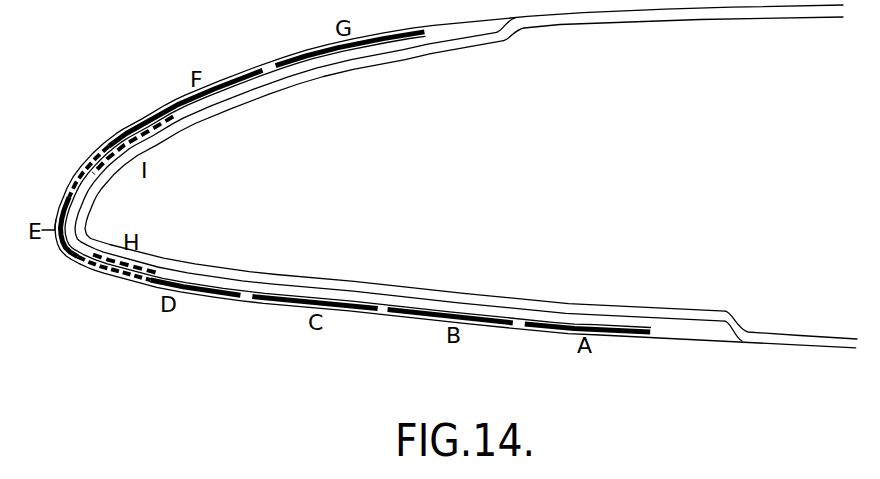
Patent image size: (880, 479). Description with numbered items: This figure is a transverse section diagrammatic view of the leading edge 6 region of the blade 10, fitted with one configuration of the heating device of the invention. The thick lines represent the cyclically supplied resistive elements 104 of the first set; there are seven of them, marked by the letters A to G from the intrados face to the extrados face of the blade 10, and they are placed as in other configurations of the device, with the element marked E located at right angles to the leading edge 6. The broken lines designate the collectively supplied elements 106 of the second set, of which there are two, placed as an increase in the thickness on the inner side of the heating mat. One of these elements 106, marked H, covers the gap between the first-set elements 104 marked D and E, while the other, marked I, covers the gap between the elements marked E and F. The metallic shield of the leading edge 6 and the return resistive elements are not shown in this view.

The blade 10 is at (495, 181).
The resistive elements of the first set 104 is at (277, 61).
The resistive elements of the second set 106 is at (80, 237).
The leading edge 6 is at (52, 226).